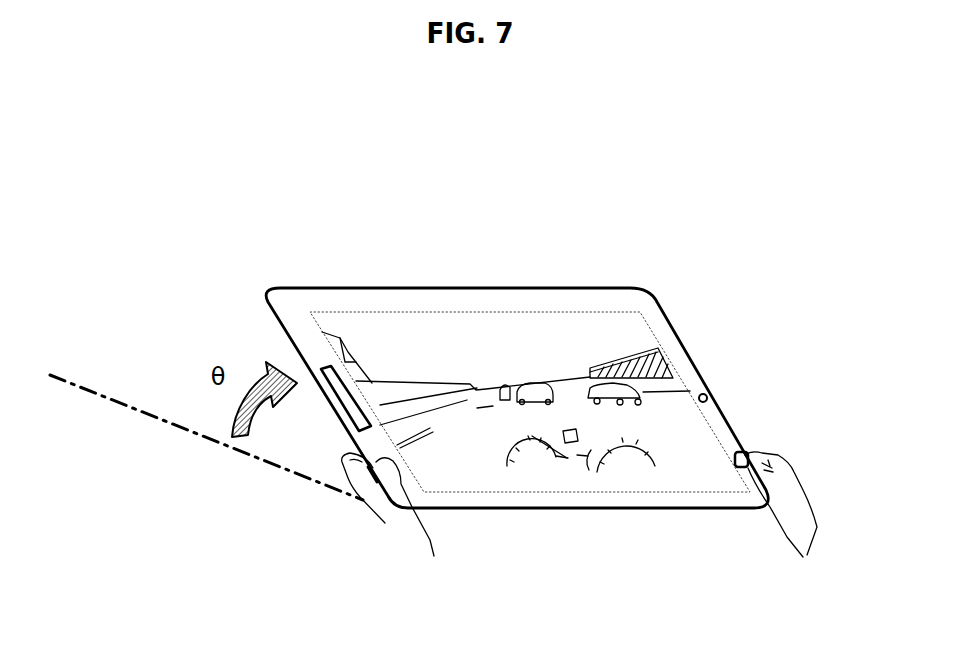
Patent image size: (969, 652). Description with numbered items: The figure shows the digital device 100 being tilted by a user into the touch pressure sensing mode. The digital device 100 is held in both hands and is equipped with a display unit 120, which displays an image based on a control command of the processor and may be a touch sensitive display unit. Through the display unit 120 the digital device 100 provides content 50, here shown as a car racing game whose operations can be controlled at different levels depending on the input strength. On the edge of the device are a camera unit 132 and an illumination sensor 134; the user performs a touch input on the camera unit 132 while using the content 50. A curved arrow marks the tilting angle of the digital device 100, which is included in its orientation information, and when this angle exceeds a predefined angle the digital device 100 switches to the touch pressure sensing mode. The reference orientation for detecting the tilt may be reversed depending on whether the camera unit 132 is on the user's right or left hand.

The digital device 100 is at (608, 250).
The display unit 120 is at (530, 492).
The content 50 is at (421, 322).
The camera unit 132 is at (744, 450).
The illumination sensor 134 is at (703, 393).